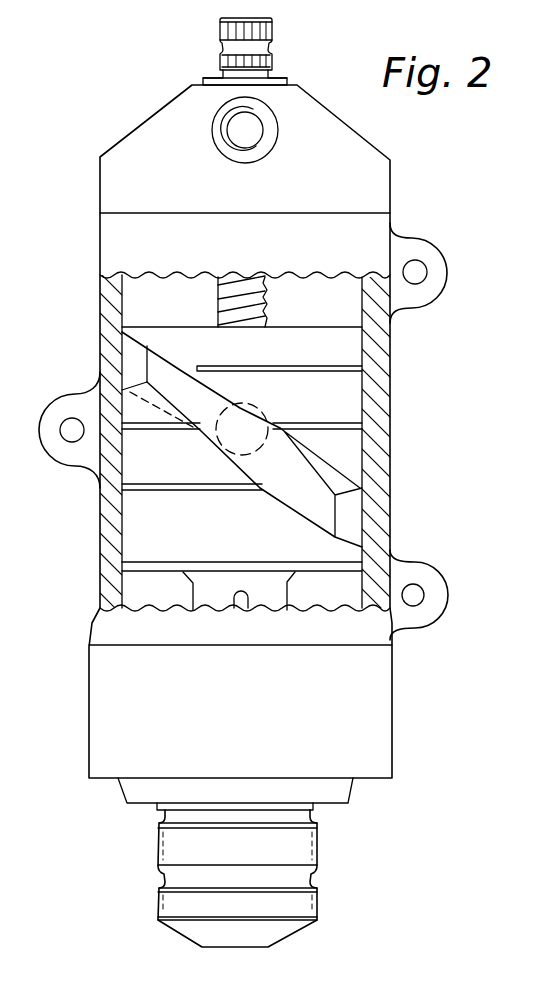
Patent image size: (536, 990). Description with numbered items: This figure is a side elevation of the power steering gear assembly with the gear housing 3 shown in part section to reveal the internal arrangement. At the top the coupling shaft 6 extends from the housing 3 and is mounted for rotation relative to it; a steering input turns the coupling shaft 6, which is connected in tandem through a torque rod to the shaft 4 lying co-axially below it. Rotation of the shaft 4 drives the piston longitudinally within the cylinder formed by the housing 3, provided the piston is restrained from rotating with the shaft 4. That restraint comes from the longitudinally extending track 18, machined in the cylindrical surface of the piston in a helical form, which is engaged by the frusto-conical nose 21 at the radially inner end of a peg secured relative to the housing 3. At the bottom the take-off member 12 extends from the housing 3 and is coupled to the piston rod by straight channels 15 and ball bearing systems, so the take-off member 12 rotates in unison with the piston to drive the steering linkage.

The gear housing 3 is at (100, 565).
The shaft 4 is at (227, 292).
The coupling shaft 6 is at (222, 50).
The take-off member 12 is at (305, 905).
The straight channels 15 is at (230, 610).
The longitudinally extending track 18 is at (310, 500).
The frusto-conical nose 21 is at (218, 424).